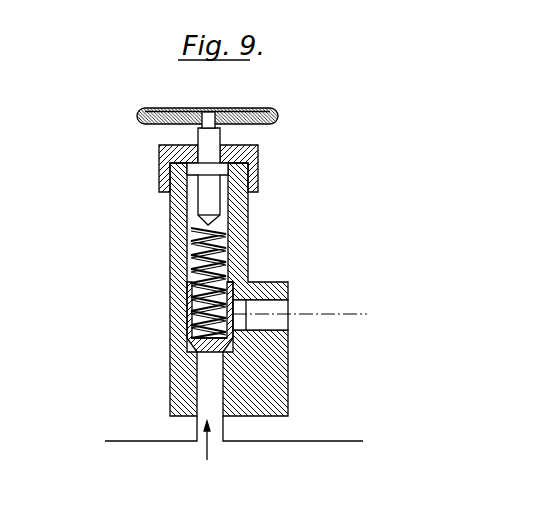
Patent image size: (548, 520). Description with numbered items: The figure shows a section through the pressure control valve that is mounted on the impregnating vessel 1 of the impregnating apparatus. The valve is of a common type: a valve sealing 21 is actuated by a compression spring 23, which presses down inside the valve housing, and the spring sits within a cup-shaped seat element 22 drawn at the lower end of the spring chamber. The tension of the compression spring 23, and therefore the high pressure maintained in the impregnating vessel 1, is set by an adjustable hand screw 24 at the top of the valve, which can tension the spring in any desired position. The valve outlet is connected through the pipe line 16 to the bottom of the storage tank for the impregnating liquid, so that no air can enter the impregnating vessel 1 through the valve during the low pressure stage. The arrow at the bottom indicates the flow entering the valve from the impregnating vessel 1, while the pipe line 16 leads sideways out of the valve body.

The impregnating vessel 1 is at (195, 446).
The pipe line 16 is at (275, 313).
The valve sealing 21 is at (241, 278).
The valve seat cup 22 is at (190, 344).
The compression spring 23 is at (192, 269).
The adjustable hand screw 24 is at (279, 117).